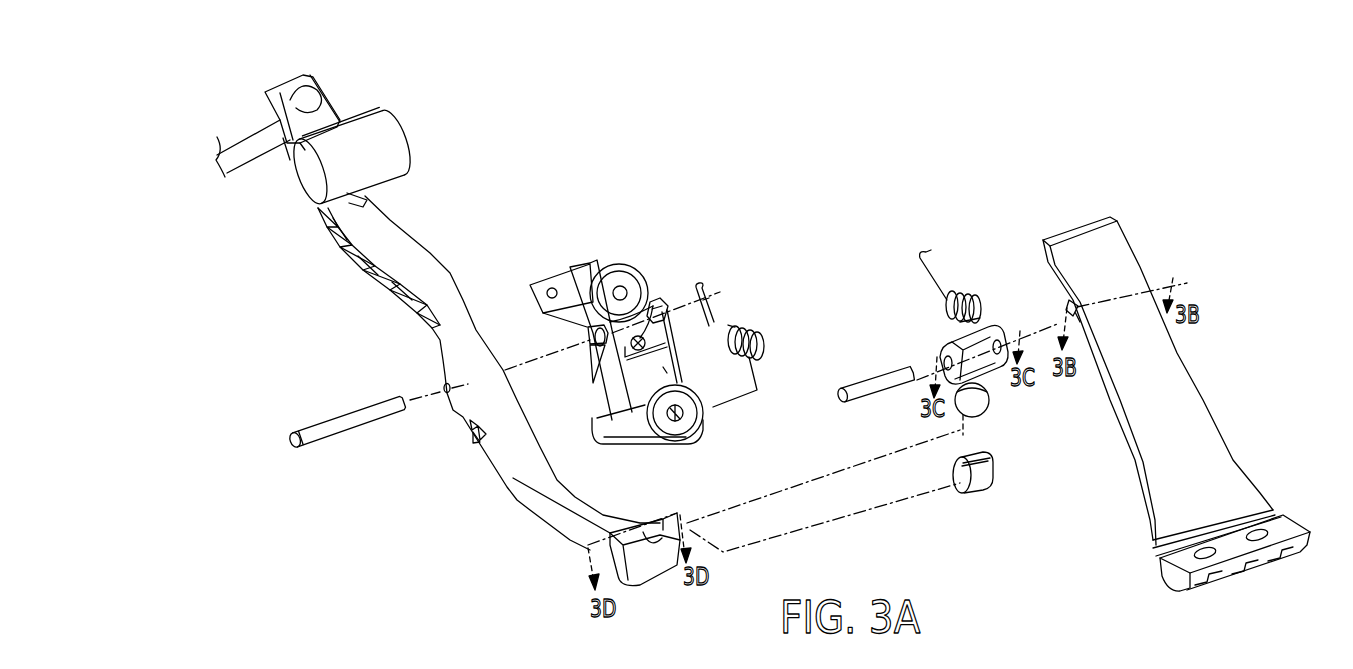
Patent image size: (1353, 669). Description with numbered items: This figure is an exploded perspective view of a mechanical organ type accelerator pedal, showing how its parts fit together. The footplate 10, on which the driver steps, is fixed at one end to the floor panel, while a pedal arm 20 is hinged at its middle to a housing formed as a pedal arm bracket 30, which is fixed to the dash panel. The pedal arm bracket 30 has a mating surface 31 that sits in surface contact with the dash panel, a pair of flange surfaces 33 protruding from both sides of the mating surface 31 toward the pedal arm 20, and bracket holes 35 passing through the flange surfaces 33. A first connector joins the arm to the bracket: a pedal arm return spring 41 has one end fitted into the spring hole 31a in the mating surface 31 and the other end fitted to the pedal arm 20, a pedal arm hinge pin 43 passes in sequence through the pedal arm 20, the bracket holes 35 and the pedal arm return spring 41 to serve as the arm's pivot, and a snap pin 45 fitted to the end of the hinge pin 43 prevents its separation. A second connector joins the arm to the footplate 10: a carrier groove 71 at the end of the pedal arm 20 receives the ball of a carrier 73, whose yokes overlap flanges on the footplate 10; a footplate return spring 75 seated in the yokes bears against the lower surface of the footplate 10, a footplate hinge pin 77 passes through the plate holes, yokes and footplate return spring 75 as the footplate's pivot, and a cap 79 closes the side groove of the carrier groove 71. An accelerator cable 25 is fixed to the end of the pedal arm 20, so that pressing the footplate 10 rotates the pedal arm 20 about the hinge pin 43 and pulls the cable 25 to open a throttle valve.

The footplate 10 is at (1218, 402).
The pedal arm 20 is at (488, 466).
The accelerator cable 25 is at (242, 133).
The pedal arm bracket 30 is at (610, 318).
The mating surface 31 is at (611, 266).
The spring hole 31a is at (623, 286).
The flange surfaces 33 is at (586, 337).
The bracket holes 35 is at (620, 362).
The pedal arm return spring 41 is at (760, 345).
The pedal arm hinge pin 43 is at (322, 428).
The snap pin 45 is at (712, 302).
The carrier groove 71 is at (648, 545).
The carrier 73 is at (990, 387).
The footplate return spring 75 is at (966, 293).
The footplate hinge pin 77 is at (867, 391).
The cap 79 is at (983, 490).